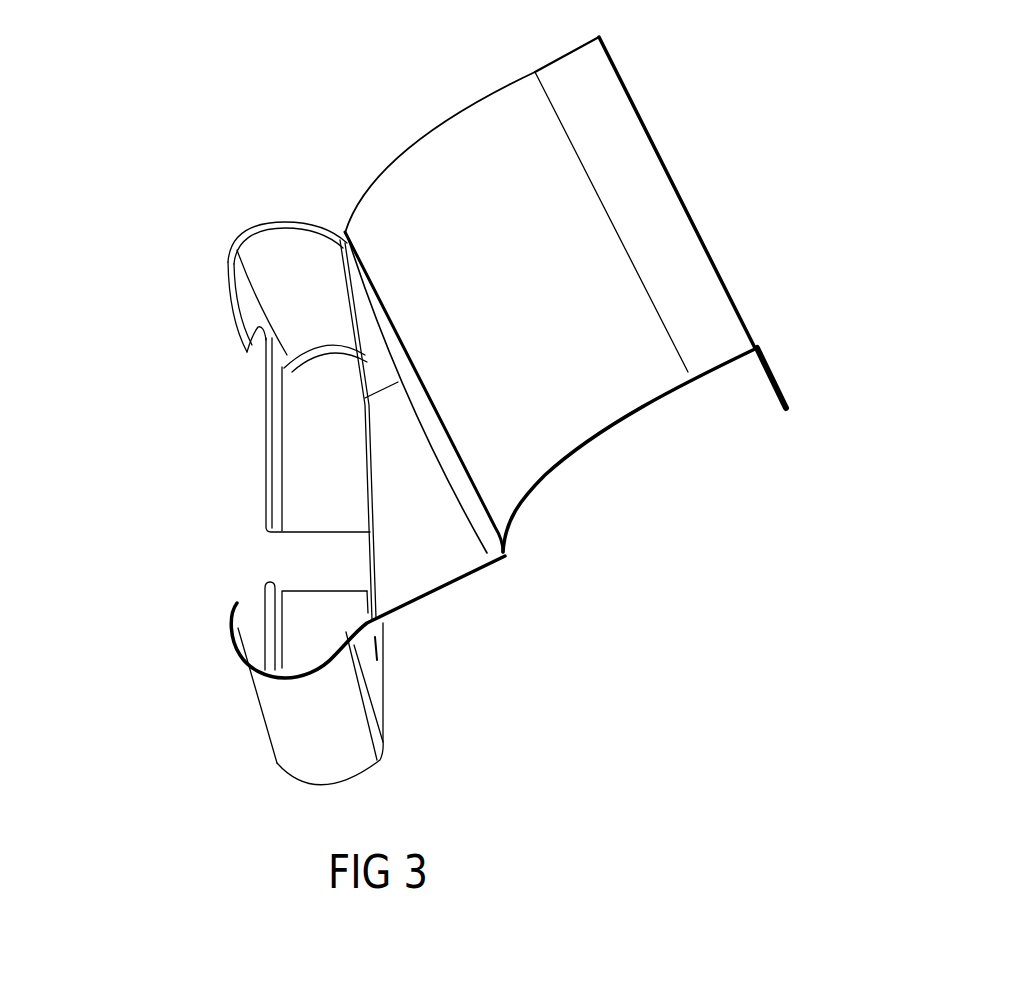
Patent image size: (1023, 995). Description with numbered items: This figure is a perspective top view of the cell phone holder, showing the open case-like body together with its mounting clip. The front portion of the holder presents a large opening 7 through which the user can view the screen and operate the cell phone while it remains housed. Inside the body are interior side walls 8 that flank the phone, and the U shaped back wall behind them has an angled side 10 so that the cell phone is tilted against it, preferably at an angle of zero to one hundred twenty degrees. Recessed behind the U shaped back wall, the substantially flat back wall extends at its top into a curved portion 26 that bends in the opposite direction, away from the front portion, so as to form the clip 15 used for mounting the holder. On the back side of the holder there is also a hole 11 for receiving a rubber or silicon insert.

The large opening 7 is at (257, 358).
The interior side walls 8 is at (290, 258).
The angled side of U shaped back wall 10 is at (508, 563).
The hole 11 is at (378, 643).
The clip 15 is at (773, 370).
The curved portion 26 is at (645, 405).